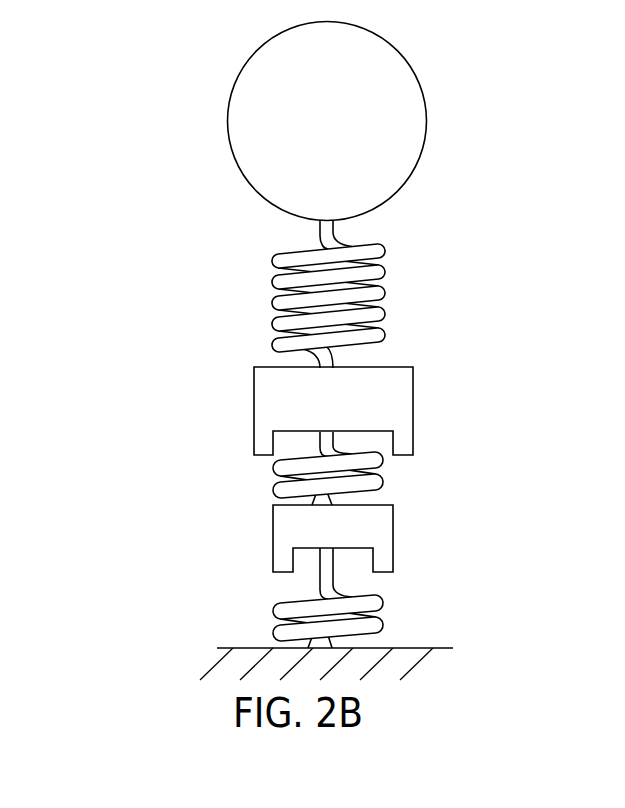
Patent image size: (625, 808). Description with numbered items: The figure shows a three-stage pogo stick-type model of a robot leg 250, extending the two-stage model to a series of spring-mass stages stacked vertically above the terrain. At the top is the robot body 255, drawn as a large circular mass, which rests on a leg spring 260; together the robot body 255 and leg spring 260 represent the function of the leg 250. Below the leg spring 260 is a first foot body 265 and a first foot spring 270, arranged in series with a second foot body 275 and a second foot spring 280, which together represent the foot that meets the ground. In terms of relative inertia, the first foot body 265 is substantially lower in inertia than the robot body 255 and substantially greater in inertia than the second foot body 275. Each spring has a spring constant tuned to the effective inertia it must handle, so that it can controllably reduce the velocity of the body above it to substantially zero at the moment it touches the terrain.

The leg 250 is at (168, 69).
The robot body 255 is at (427, 122).
The leg spring 260 is at (385, 292).
The first foot body 265 is at (254, 422).
The first foot spring 270 is at (273, 473).
The second foot body 275 is at (393, 538).
The second foot spring 280 is at (383, 602).